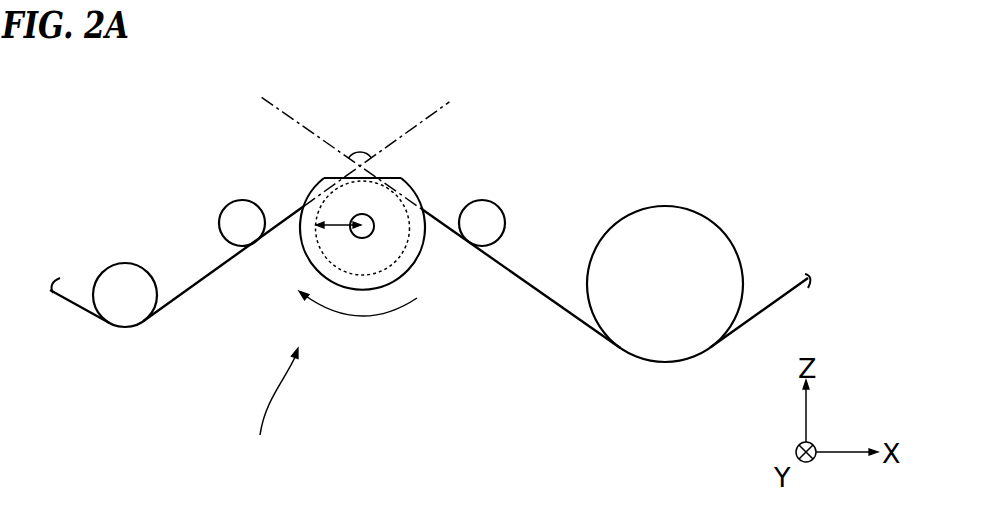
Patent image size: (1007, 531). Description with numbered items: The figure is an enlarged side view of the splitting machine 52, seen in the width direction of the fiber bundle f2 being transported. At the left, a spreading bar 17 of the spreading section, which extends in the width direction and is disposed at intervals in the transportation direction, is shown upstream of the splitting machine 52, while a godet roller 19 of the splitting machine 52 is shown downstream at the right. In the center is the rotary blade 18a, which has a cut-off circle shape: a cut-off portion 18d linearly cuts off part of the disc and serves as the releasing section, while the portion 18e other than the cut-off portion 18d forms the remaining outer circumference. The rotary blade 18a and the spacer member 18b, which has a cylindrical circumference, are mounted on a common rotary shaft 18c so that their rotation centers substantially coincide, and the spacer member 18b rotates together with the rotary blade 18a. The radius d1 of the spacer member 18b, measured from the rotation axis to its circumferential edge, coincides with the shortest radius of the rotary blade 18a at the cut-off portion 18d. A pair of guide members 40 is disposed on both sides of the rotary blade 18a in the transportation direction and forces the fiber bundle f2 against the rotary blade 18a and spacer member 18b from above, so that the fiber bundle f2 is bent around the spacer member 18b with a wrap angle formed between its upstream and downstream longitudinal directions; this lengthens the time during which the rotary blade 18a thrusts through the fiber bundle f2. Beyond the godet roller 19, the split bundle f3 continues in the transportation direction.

The spreading bar 17 is at (113, 266).
The godet roller 19 is at (701, 213).
The guide member 40 is at (221, 215).
The rotary blade 18a is at (419, 259).
The spacer member 18b is at (413, 222).
The rotary shaft 18c is at (368, 236).
The cut-off portion 18d is at (403, 167).
The portion other than the cut-off portion 18e is at (306, 246).
The splitting machine 52 is at (269, 410).
The fiber bundle f2 is at (194, 285).
The tension direction f3 is at (577, 318).
The radius of the spacer member d1 is at (327, 198).